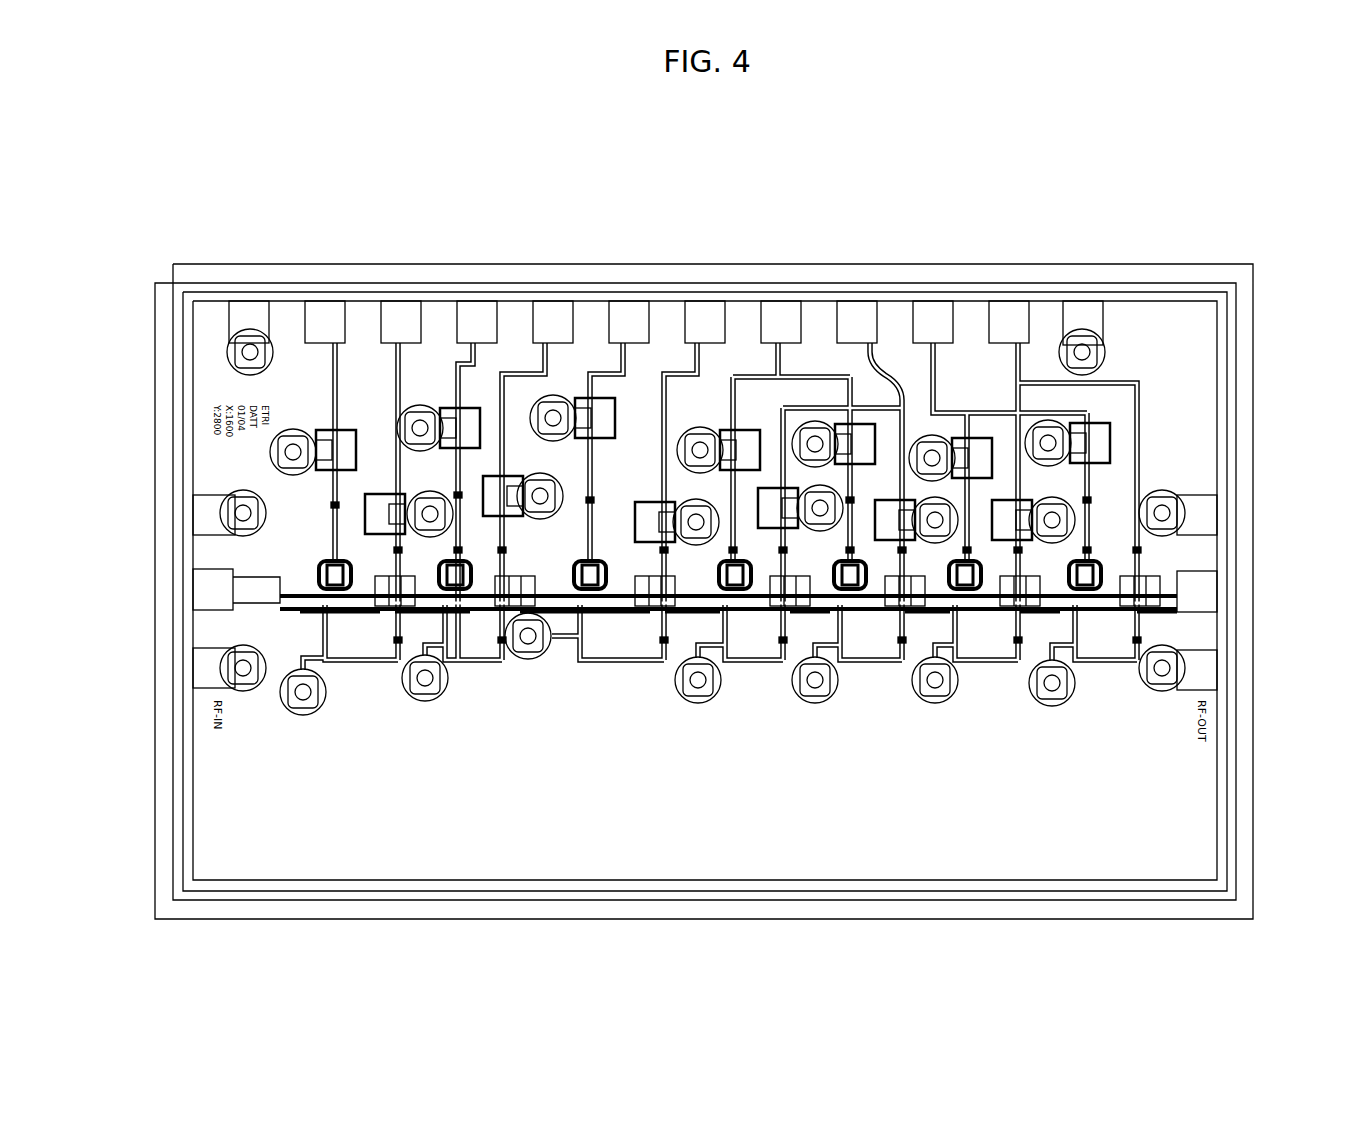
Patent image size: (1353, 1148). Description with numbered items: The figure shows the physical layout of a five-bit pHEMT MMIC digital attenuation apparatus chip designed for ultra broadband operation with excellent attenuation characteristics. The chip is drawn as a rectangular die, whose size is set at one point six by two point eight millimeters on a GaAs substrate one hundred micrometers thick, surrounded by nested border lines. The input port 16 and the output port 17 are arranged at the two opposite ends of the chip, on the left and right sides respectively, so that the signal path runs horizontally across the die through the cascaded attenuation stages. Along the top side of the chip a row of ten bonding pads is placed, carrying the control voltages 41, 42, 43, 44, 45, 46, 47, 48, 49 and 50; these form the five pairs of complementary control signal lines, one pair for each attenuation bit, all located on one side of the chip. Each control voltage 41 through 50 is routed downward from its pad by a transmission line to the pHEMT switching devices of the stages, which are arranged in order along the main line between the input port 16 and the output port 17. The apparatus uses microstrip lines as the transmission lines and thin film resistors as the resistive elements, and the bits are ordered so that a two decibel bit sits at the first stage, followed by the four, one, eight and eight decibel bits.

The input port 16 is at (200, 597).
The output port 17 is at (1205, 598).
The control voltage 41 is at (330, 300).
The control voltage 42 is at (405, 300).
The control voltage 43 is at (480, 300).
The control voltage 44 is at (555, 300).
The control voltage 45 is at (628, 300).
The control voltage 46 is at (705, 300).
The control voltage 47 is at (780, 300).
The control voltage 48 is at (855, 300).
The control voltage 49 is at (935, 300).
The control voltage 50 is at (1008, 300).